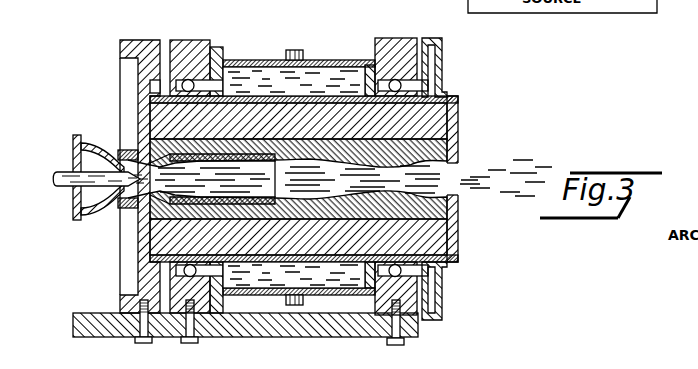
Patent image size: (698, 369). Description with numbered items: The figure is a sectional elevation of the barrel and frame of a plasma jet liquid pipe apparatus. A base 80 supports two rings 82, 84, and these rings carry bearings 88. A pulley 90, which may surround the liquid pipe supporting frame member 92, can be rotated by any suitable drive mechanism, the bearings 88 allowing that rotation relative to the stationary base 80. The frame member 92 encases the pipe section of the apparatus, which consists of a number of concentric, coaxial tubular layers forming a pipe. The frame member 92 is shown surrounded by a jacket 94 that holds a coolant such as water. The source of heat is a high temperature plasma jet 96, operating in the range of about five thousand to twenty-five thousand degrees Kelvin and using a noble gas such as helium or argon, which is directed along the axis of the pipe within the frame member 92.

The base 80 is at (418, 328).
The ring 82 is at (183, 43).
The ring 84 is at (398, 41).
The bearings 88 is at (226, 85).
The pulley 90 is at (440, 45).
The frame member 92 is at (293, 97).
The jacket 94 is at (277, 82).
The plasma jet 96 is at (103, 212).